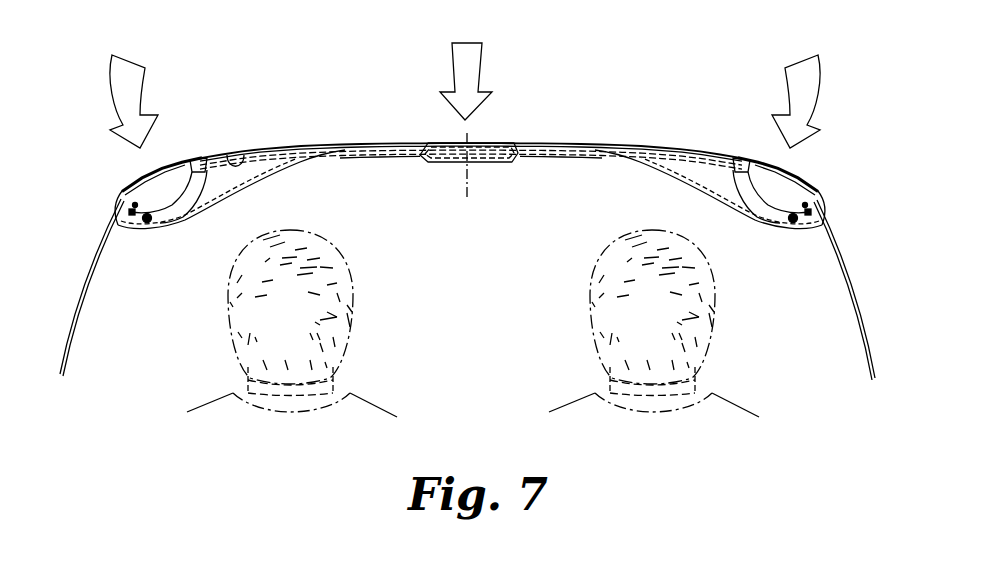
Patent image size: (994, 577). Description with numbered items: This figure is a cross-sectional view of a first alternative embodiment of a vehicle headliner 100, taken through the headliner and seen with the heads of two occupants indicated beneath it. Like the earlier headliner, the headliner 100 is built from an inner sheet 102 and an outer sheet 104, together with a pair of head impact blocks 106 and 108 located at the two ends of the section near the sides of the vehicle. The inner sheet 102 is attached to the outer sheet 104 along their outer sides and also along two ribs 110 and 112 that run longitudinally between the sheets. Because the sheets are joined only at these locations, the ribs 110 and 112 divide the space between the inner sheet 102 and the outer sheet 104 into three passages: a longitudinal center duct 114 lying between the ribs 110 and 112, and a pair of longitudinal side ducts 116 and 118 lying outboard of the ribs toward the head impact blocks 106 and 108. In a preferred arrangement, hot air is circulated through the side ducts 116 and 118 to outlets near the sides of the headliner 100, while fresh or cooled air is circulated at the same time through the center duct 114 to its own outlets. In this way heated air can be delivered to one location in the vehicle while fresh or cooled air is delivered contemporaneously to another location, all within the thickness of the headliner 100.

The headliner 100 is at (606, 128).
The inner sheet 102 is at (275, 170).
The outer sheet 104 is at (247, 167).
The head impact block 106 is at (168, 220).
The head impact block 108 is at (757, 225).
The rib 110 is at (391, 163).
The rib 112 is at (547, 163).
The longitudinal center duct 114 is at (445, 160).
The longitudinal side duct 116 is at (222, 181).
The longitudinal side duct 118 is at (700, 177).